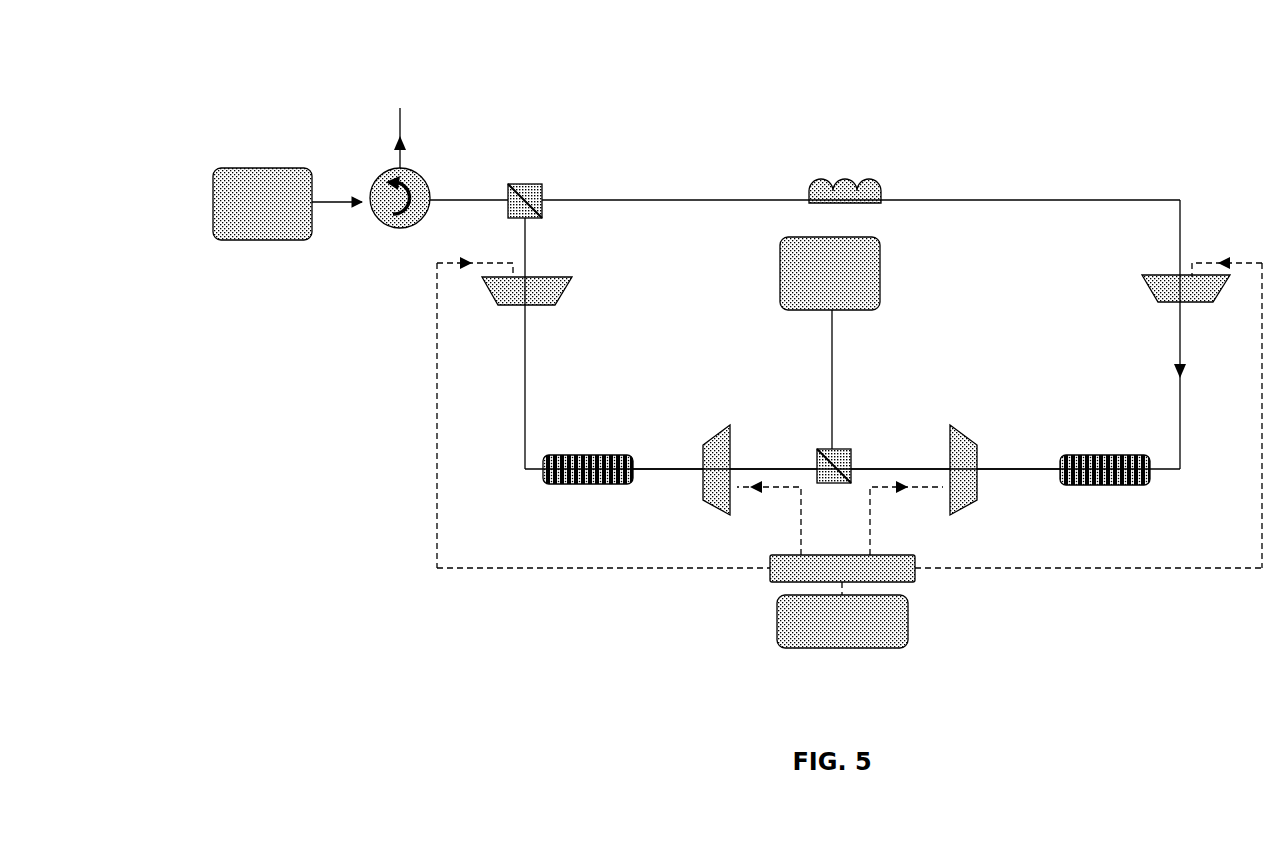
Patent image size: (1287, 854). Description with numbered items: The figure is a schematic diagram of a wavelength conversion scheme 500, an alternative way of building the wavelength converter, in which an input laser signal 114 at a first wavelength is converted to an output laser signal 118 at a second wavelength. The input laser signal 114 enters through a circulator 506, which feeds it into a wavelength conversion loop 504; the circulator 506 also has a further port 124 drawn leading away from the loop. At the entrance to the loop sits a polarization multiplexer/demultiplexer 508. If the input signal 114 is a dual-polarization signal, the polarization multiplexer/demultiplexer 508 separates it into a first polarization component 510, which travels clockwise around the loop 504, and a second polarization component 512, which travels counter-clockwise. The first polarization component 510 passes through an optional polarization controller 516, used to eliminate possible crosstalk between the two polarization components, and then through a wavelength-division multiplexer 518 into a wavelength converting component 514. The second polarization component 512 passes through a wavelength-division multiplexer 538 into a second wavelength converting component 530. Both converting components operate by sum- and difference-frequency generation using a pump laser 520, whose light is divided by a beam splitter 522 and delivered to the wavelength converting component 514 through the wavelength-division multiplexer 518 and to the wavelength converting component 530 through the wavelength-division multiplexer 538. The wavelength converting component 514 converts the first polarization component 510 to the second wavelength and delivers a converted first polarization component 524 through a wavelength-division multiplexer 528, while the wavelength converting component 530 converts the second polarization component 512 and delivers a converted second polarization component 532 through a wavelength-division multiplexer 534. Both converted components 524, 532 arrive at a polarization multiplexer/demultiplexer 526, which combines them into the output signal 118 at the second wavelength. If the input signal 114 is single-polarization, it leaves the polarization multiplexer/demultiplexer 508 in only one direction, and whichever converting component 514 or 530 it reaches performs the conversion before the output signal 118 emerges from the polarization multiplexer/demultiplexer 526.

The wavelength conversion scheme 500 is at (834, 48).
The laser signal 114 is at (230, 242).
The laser signal 118 is at (880, 268).
The return output port 124 is at (402, 127).
The wavelength conversion loop 504 is at (1001, 166).
The circulator 506 is at (380, 218).
The polarization multiplexer/demultiplexer 508 is at (520, 180).
The first polarization component 510 is at (580, 200).
The second polarization component 512 is at (527, 236).
The wavelength converting component 514 is at (1148, 485).
The polarization controller 516 is at (827, 175).
The wavelength-division multiplexer 518 is at (1153, 275).
The pump laser 520 is at (908, 628).
The beam splitter 522 is at (915, 580).
The converted first polarization component 524 is at (987, 468).
The polarization multiplexer/demultiplexer 526 is at (851, 447).
The wavelength-division multiplexer 528 is at (965, 430).
The wavelength converting component 530 is at (542, 470).
The converted second polarization component 532 is at (672, 470).
The wavelength-division multiplexer 534 is at (718, 428).
The wavelength-division multiplexer 538 is at (488, 290).